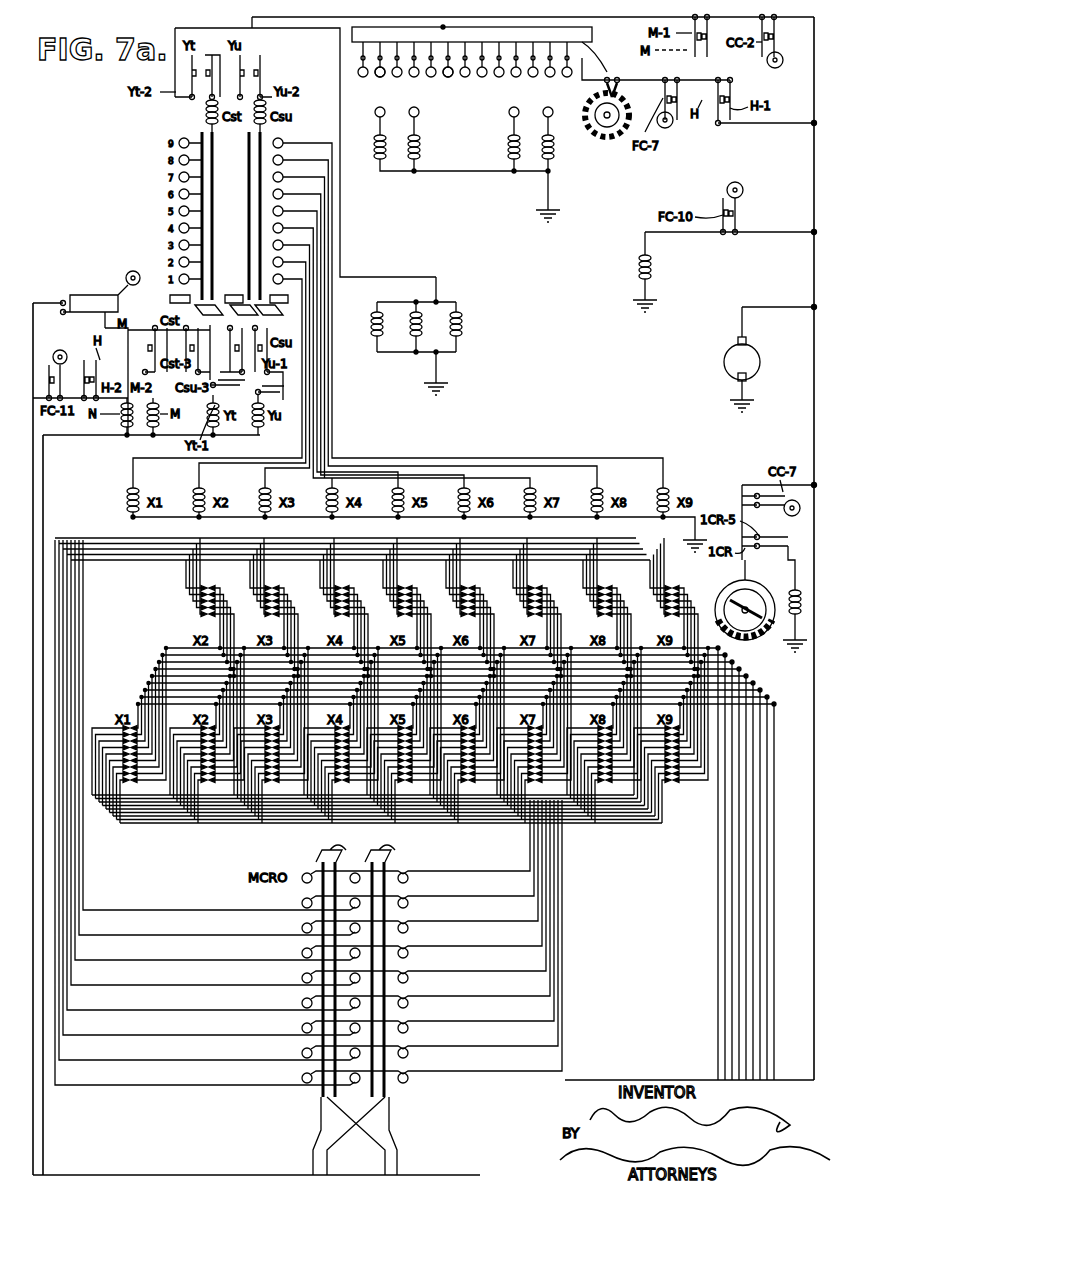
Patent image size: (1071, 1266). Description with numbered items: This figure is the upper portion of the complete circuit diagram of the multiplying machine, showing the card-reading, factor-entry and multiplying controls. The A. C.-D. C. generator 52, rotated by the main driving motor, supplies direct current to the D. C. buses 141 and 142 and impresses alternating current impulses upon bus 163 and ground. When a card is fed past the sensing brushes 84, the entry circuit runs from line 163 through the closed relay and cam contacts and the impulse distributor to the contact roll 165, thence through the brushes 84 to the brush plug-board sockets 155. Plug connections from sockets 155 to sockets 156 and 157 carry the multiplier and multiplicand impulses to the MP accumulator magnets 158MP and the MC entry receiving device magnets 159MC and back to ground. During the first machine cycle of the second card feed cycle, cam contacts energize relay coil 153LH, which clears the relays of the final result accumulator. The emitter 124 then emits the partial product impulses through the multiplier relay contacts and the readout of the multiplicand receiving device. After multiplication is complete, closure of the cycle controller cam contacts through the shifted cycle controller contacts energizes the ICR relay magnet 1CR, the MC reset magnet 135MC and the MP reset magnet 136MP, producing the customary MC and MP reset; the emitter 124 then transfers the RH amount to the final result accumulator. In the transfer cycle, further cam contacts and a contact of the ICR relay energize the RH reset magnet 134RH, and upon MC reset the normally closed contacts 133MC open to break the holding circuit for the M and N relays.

The sensing brushes 84 is at (352, 47).
The brush plug-board sockets 155 is at (446, 77).
The sockets 156 is at (385, 108).
The sockets 157 is at (544, 109).
The MP accumulator magnets 158MP is at (422, 146).
The MC entry receiving device magnets 159MC is at (508, 156).
The contact roll 165 is at (605, 89).
The D. C. bus 142 is at (38, 303).
The D. C. bus 141 is at (43, 1150).
The normally closed contacts 133MC is at (72, 298).
The MP reset magnet 136MP is at (370, 312).
The ICR relay magnet 1CR is at (410, 330).
The MC reset magnet 135MC is at (465, 324).
The relay coil 153LH is at (652, 268).
The bus 163 is at (814, 290).
The A. C.-D. C. generator 52 is at (724, 362).
The emitter 124 is at (728, 600).
The RH reset magnet 134RH is at (790, 620).